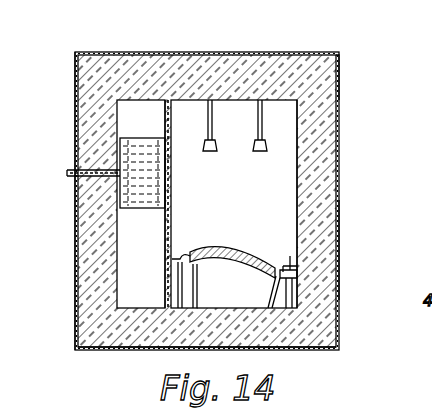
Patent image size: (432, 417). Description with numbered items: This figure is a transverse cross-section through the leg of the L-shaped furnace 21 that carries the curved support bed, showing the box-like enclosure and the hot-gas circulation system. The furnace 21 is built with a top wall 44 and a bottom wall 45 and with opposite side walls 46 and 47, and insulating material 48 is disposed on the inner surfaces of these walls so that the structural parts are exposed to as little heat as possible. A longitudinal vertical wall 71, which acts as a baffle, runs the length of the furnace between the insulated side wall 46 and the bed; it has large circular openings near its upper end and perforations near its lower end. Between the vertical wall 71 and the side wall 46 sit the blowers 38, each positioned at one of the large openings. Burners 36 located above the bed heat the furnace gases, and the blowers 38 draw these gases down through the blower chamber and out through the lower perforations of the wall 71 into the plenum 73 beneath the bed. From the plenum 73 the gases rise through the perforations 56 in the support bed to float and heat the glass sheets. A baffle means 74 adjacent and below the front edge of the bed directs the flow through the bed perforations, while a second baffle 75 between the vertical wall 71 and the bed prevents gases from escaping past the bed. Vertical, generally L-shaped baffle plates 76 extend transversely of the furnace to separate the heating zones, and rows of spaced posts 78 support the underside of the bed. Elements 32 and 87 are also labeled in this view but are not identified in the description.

The furnace 21 is at (255, 50).
The top wall 44 is at (312, 52).
The side wall 46 is at (181, 62).
The insulating material 48 is at (325, 173).
The side wall 47 is at (338, 240).
The terminal 32 is at (298, 272).
The vertical wall 71 is at (160, 112).
The blowers 38 is at (138, 138).
The burners 36 is at (258, 152).
The second baffle 75 is at (180, 258).
The perforations 56 is at (245, 256).
The baffle plates 76 is at (130, 265).
The baffle means 74 is at (253, 296).
The posts 78 is at (171, 308).
The plenum 73 is at (203, 295).
The brace 87 is at (263, 308).
The bottom wall 45 is at (113, 348).